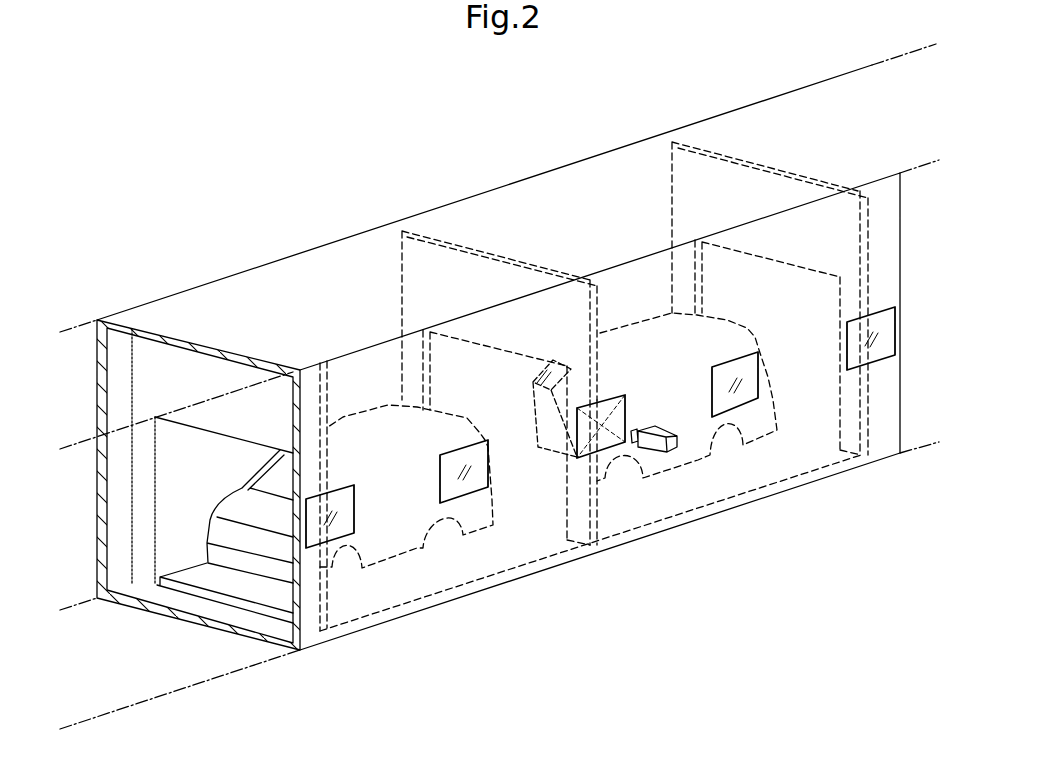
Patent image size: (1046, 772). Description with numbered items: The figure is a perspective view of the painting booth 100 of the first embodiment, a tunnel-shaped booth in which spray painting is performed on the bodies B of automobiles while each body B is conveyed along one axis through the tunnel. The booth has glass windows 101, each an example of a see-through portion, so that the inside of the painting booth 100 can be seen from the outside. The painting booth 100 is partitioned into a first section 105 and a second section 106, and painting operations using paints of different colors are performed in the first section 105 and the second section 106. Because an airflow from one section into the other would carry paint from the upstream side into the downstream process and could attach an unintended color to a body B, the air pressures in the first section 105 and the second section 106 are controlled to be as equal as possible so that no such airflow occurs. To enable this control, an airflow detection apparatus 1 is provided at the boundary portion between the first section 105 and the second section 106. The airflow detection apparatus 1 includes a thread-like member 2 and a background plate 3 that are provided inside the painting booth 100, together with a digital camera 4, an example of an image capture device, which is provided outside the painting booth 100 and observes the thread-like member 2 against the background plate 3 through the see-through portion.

The painting booth 100 is at (408, 130).
The first section 105 is at (312, 287).
The second section 106 is at (603, 190).
The glass window 101 is at (587, 450).
The body B is at (235, 507).
The airflow detection apparatus 1 is at (640, 408).
The thread-like member 2 is at (605, 403).
The background plate 3 is at (533, 386).
The digital camera 4 is at (677, 445).